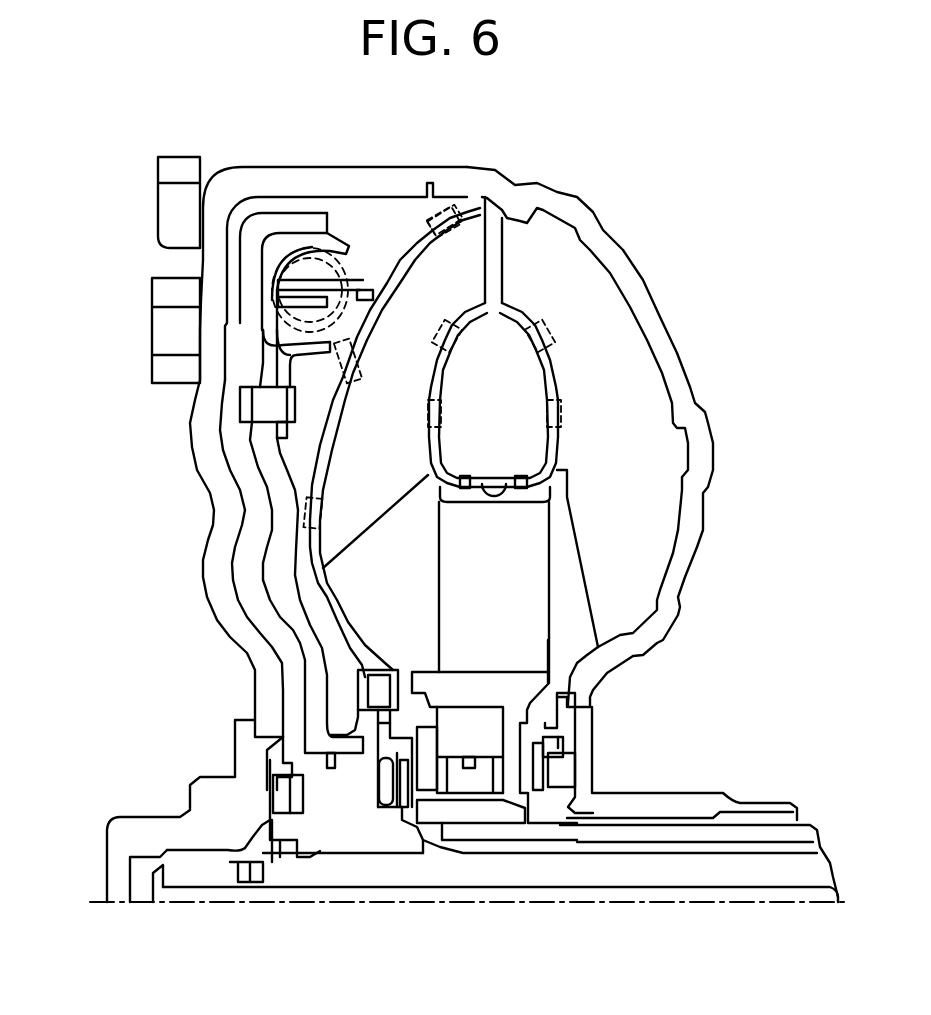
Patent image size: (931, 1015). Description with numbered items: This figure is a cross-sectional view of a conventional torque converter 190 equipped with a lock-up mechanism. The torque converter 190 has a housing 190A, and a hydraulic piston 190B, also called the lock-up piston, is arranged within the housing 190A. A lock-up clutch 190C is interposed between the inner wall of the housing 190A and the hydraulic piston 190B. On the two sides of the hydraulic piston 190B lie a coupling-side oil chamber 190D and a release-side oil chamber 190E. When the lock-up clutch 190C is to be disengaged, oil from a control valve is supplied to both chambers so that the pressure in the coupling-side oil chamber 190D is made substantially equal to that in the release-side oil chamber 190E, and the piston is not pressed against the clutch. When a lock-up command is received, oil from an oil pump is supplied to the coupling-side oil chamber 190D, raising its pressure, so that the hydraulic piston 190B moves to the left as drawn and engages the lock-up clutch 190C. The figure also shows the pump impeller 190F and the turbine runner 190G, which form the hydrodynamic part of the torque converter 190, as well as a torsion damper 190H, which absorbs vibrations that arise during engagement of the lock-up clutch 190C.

The torque converter 190 is at (624, 228).
The housing 190A is at (214, 497).
The hydraulic piston 190B is at (272, 552).
The lock-up clutch 190C is at (232, 262).
The coupling-side oil chamber 190D is at (307, 598).
The release-side oil chamber 190E is at (223, 433).
The pump impeller 190F is at (663, 507).
The turbine runner 190G is at (467, 242).
The torsion damper 190H is at (302, 305).